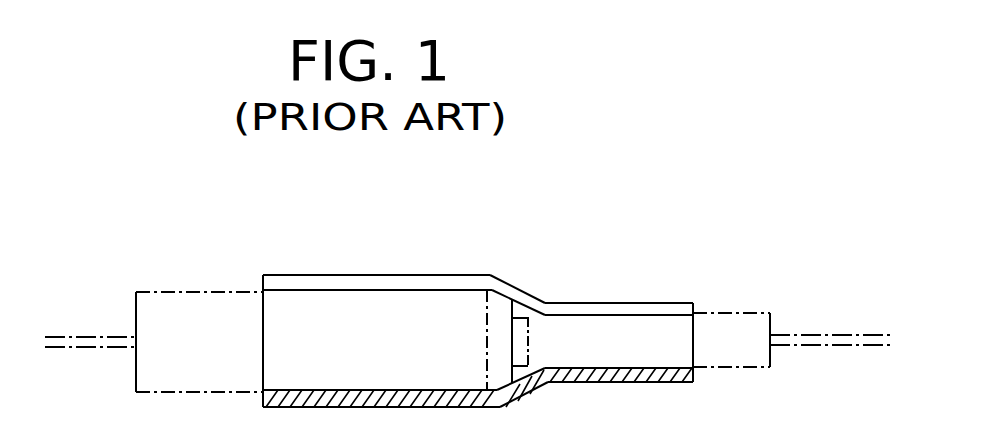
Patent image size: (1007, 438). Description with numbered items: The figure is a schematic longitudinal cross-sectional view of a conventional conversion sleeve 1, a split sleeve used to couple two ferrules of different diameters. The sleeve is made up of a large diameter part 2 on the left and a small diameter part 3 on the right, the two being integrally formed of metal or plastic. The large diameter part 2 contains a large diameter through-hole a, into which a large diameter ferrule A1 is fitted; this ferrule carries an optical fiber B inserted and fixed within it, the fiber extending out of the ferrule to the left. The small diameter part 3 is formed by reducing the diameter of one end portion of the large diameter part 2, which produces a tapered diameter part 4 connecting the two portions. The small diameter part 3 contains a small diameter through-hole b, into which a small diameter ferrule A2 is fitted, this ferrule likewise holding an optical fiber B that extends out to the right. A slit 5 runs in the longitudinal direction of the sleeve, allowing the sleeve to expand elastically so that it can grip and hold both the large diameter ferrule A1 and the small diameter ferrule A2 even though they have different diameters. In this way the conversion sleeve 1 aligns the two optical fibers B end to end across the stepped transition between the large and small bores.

The conversion sleeve 1 is at (490, 266).
The large diameter part 2 is at (330, 275).
The small diameter part 3 is at (620, 303).
The tapered diameter part 4 is at (525, 292).
The slit 5 is at (449, 279).
The large diameter ferrule A1 is at (167, 292).
The small diameter ferrule A2 is at (756, 313).
The optical fiber B is at (95, 348).
The large diameter through-hole a is at (288, 350).
The small diameter through-hole b is at (700, 352).